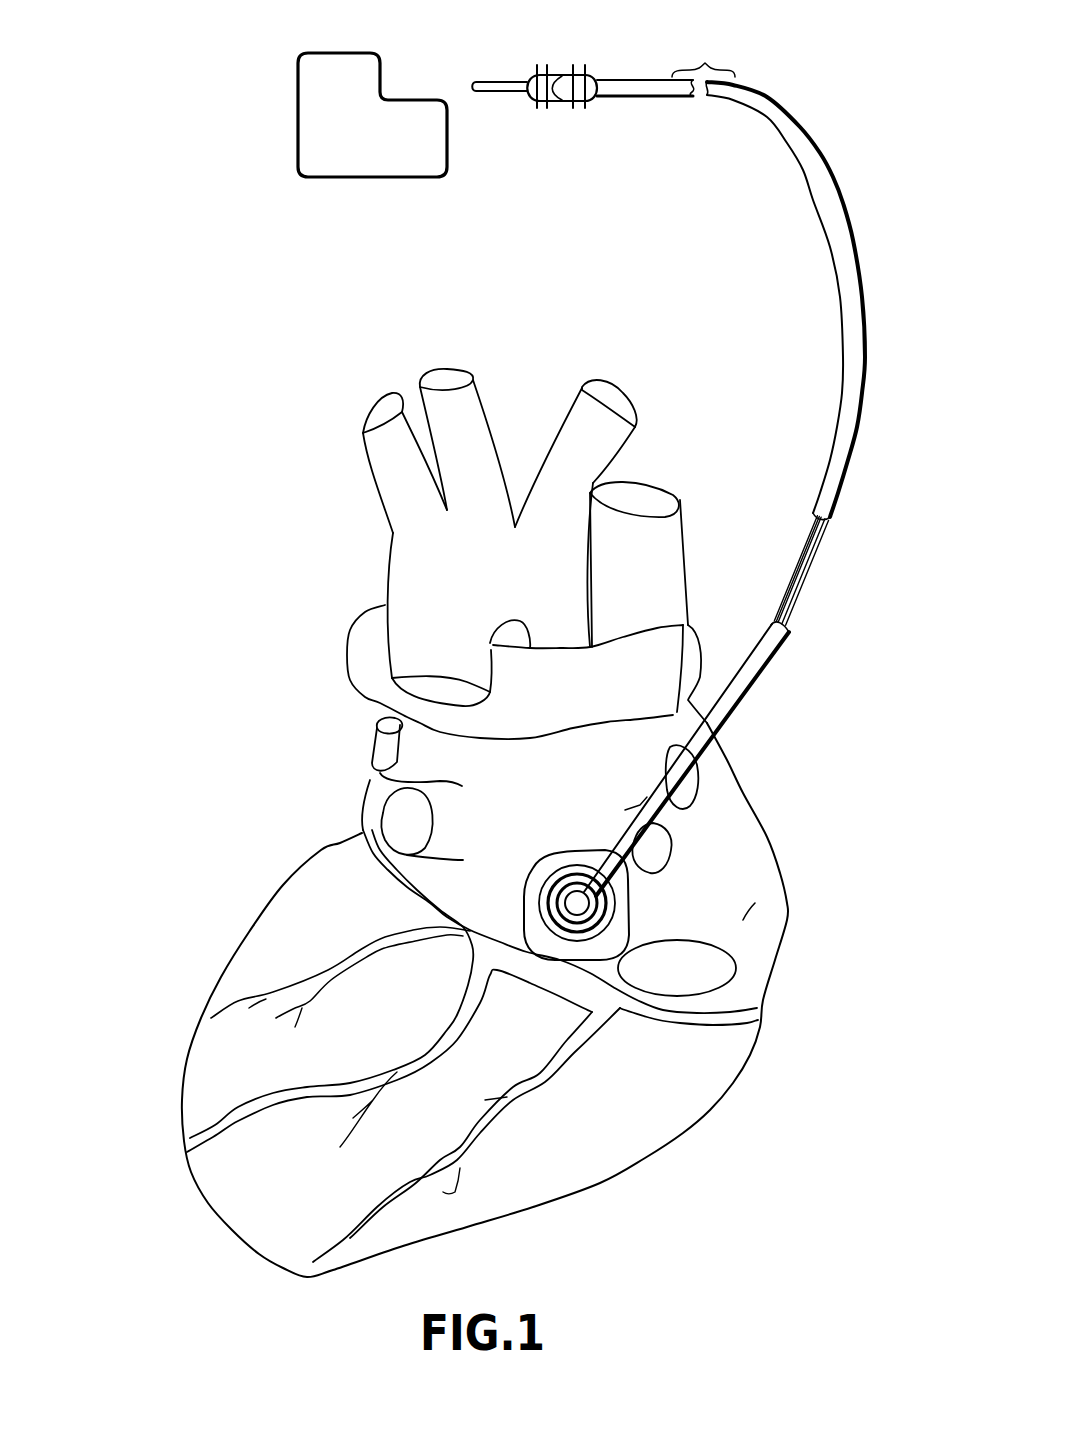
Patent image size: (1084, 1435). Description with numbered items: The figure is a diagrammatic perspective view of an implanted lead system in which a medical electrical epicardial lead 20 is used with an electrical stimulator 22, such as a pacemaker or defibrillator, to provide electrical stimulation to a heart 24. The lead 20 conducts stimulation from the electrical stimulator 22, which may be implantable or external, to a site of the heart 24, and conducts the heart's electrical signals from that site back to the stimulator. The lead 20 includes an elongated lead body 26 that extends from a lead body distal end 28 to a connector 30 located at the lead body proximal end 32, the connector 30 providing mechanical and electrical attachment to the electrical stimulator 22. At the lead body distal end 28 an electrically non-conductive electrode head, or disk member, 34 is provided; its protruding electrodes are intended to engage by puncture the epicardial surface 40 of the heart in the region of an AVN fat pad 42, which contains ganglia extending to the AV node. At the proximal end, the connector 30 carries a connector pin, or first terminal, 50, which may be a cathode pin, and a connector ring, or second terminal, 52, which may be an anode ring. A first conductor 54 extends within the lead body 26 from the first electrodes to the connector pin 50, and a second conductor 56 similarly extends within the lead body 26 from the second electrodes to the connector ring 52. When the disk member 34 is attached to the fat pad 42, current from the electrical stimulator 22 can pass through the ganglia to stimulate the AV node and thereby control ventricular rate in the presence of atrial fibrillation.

The medical electrical epicardial lead 20 is at (668, 511).
The electrical stimulator 22 is at (330, 57).
The heart 24 is at (376, 534).
The elongated lead body 26 is at (843, 313).
The lead body distal end 28 is at (613, 853).
The connector 30 is at (576, 109).
The lead body proximal end 32 is at (618, 93).
The electrode head (disk member) 34 is at (526, 905).
The epicardial surface 40 is at (513, 843).
The AVN fat pad 42 is at (523, 890).
The connector pin (first terminal) 50 is at (497, 83).
The connector ring (second terminal) 52 is at (567, 80).
The first conductor 54 is at (805, 555).
The second conductor 56 is at (810, 568).